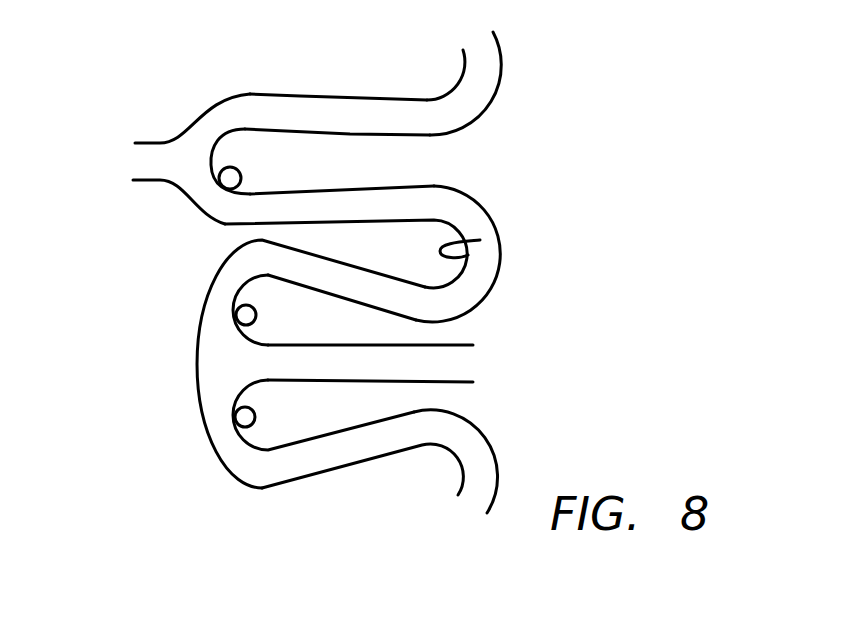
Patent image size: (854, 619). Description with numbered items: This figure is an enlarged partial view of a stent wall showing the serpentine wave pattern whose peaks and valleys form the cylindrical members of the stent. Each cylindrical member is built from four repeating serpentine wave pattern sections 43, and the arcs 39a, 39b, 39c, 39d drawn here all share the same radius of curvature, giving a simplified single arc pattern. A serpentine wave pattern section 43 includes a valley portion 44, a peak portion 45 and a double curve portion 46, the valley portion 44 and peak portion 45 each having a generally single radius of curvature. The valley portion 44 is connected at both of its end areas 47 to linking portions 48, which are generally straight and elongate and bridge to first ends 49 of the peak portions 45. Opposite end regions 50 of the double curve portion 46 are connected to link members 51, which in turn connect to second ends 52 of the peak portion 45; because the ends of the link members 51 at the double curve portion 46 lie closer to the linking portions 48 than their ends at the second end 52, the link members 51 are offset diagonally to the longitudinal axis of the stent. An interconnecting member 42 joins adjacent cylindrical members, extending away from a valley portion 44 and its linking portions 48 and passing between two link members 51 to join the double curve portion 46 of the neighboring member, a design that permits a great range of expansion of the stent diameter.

The arc 39a is at (245, 196).
The arc 39b is at (480, 240).
The arc 39c is at (237, 305).
The arc 39d is at (230, 407).
The interconnecting member 42 is at (160, 163).
The serpentine wave pattern section 43 is at (529, 108).
The valley portion 44 is at (197, 163).
The peak portion 45 is at (490, 265).
The double curve portion 46 is at (240, 362).
The end area 47 is at (260, 113).
The linking portion 48 is at (362, 118).
The first end 49 is at (468, 218).
The opposite end region 50 is at (222, 283).
The link member 51 is at (353, 445).
The second end 52 is at (465, 297).